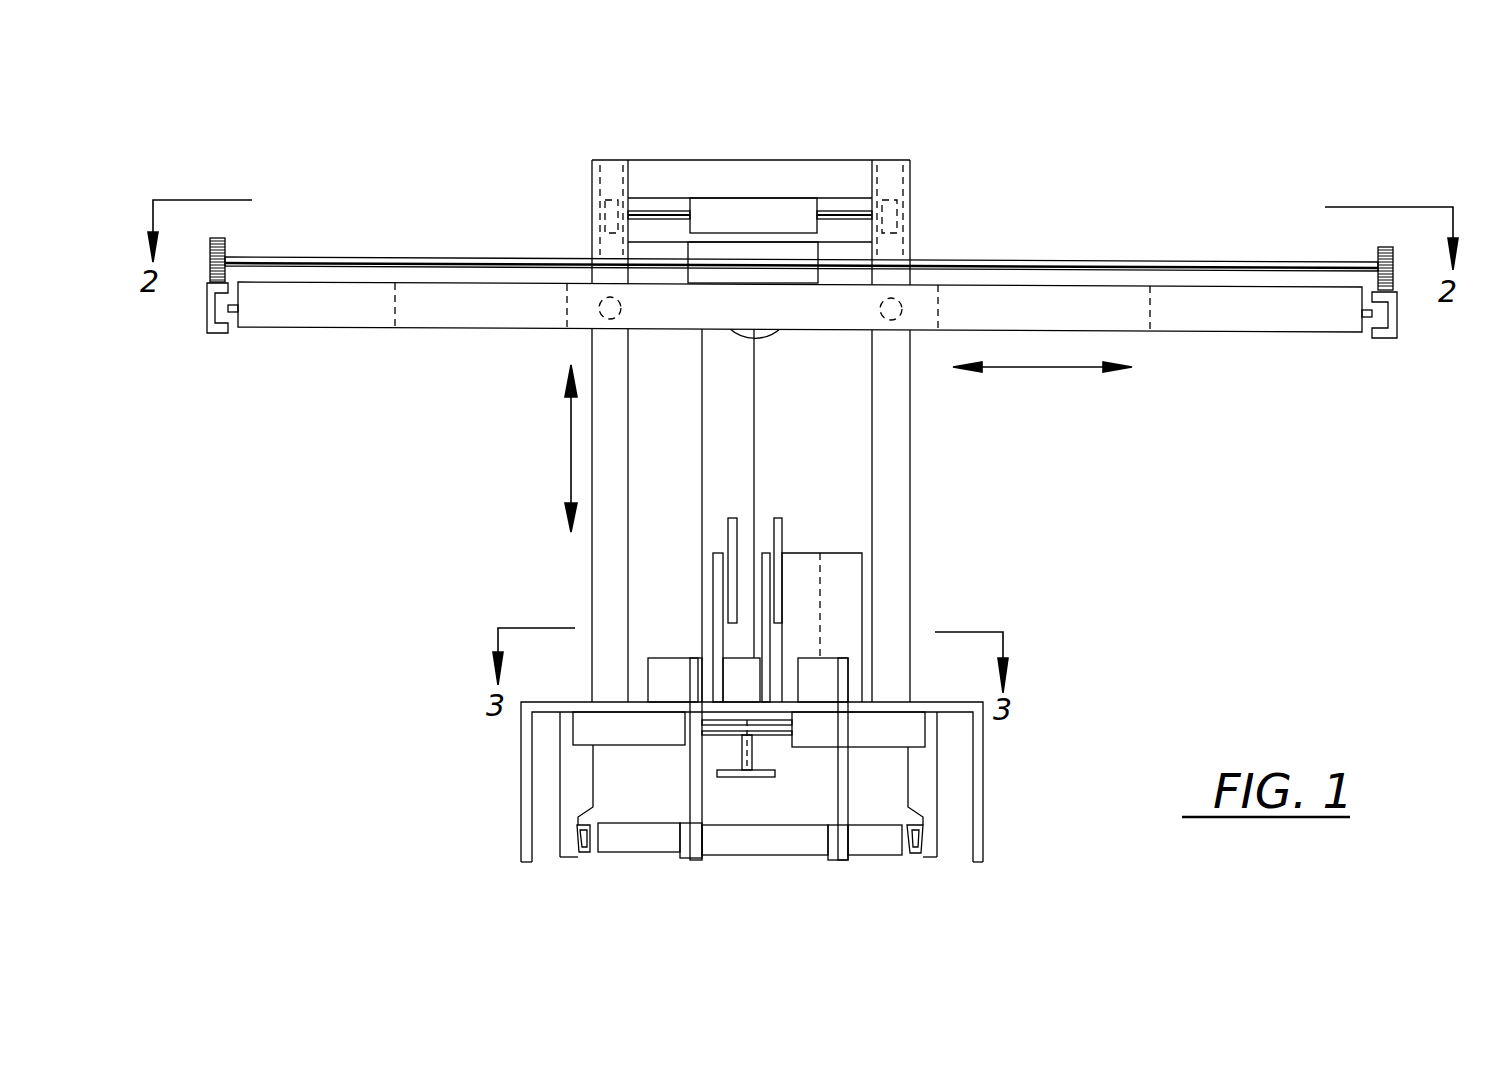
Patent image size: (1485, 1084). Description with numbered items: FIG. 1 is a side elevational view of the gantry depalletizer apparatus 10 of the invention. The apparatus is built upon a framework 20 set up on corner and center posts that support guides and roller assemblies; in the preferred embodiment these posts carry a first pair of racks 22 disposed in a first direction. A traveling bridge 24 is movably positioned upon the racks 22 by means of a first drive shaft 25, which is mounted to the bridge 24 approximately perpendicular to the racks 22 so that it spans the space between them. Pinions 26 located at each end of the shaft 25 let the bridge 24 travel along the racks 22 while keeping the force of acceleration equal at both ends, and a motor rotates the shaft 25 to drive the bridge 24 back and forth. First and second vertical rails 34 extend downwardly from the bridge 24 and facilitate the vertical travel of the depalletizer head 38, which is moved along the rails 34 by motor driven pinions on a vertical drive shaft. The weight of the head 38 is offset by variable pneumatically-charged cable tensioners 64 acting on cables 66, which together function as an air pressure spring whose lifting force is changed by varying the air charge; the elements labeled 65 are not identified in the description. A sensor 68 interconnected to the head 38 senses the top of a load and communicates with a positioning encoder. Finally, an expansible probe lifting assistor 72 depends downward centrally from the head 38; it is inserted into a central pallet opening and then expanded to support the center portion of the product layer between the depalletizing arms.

The gantry apparatus 10 is at (1200, 192).
The framework 20 is at (1398, 323).
The first pair of racks 22 is at (208, 285).
The traveling bridge 24 is at (903, 178).
The first drive shaft 25 is at (445, 257).
The pinions 26 is at (225, 242).
The vertical rails 34 is at (600, 545).
The depalletizer head 38 is at (1000, 772).
The cable tensioners 64 is at (755, 542).
The guide bar 65 is at (728, 575).
The cables 66 is at (754, 417).
The sensor 68 is at (525, 840).
The expansible probe lifting assistor 72 is at (747, 778).